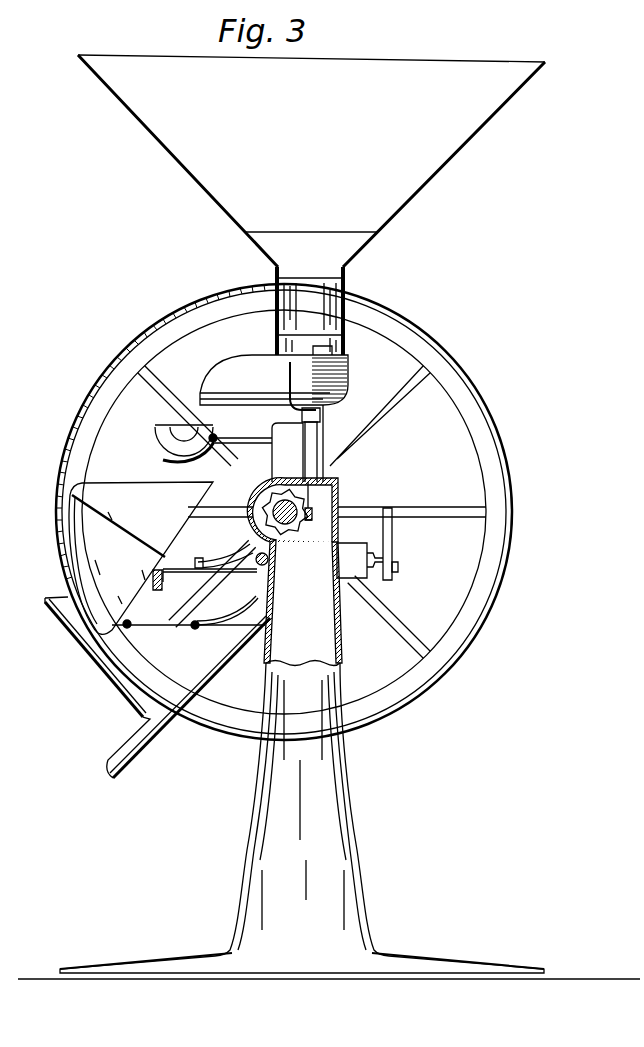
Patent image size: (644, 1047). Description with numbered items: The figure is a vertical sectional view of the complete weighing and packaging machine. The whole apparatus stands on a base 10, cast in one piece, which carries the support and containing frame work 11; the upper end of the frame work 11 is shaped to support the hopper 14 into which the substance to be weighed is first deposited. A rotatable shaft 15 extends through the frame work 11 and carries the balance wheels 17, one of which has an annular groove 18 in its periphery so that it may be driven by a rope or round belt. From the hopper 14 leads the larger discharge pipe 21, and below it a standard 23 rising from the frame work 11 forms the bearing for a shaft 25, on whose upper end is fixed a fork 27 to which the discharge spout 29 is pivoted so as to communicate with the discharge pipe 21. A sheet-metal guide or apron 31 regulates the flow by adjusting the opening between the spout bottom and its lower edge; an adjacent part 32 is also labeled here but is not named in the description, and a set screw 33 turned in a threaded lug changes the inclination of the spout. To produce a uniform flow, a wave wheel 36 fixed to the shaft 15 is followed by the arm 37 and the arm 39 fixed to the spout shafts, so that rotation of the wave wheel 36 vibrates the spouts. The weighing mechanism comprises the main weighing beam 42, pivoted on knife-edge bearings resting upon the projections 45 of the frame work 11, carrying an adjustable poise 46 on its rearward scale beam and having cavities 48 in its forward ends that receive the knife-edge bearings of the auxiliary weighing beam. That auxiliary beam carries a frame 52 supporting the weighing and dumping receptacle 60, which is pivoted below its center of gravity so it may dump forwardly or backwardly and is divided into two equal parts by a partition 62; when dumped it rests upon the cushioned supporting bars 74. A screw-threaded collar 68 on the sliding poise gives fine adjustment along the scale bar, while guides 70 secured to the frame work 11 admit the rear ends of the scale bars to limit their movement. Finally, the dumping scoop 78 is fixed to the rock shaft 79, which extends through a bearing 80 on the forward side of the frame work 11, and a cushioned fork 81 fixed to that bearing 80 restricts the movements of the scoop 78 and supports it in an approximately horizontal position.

The base 10 is at (354, 541).
The support and containing frame work 11 is at (290, 432).
The hopper 14 is at (406, 204).
The rotatable shaft 15 is at (289, 525).
The balance wheel 17 is at (471, 436).
The annular groove 18 is at (254, 498).
The discharge pipe 21 is at (277, 327).
The standard 23 is at (317, 441).
The shaft 25 is at (318, 422).
The fork 27 is at (292, 377).
The discharge spout 29 is at (274, 380).
The guide or apron 31 is at (277, 345).
The notch 32 is at (343, 338).
The set screw 33 is at (320, 412).
The wave wheel 36 is at (300, 528).
The arm 37 is at (311, 520).
The arm 39 is at (311, 512).
The main weighing beam 42 is at (232, 558).
The projection 45 is at (258, 566).
The poise 46 is at (360, 560).
The cavity 48 is at (398, 567).
The frame 52 is at (158, 588).
The weighing and dumping receptacle 60 is at (205, 498).
The partition 62 is at (118, 549).
The screw-threaded collar 68 is at (157, 687).
The guide 70 is at (392, 542).
The cushioned supporting bar 74 is at (195, 634).
The dumping scoop 78 is at (184, 440).
The rock shaft 79 is at (181, 573).
The bearing 80 is at (243, 432).
The cushioned fork 81 is at (163, 460).